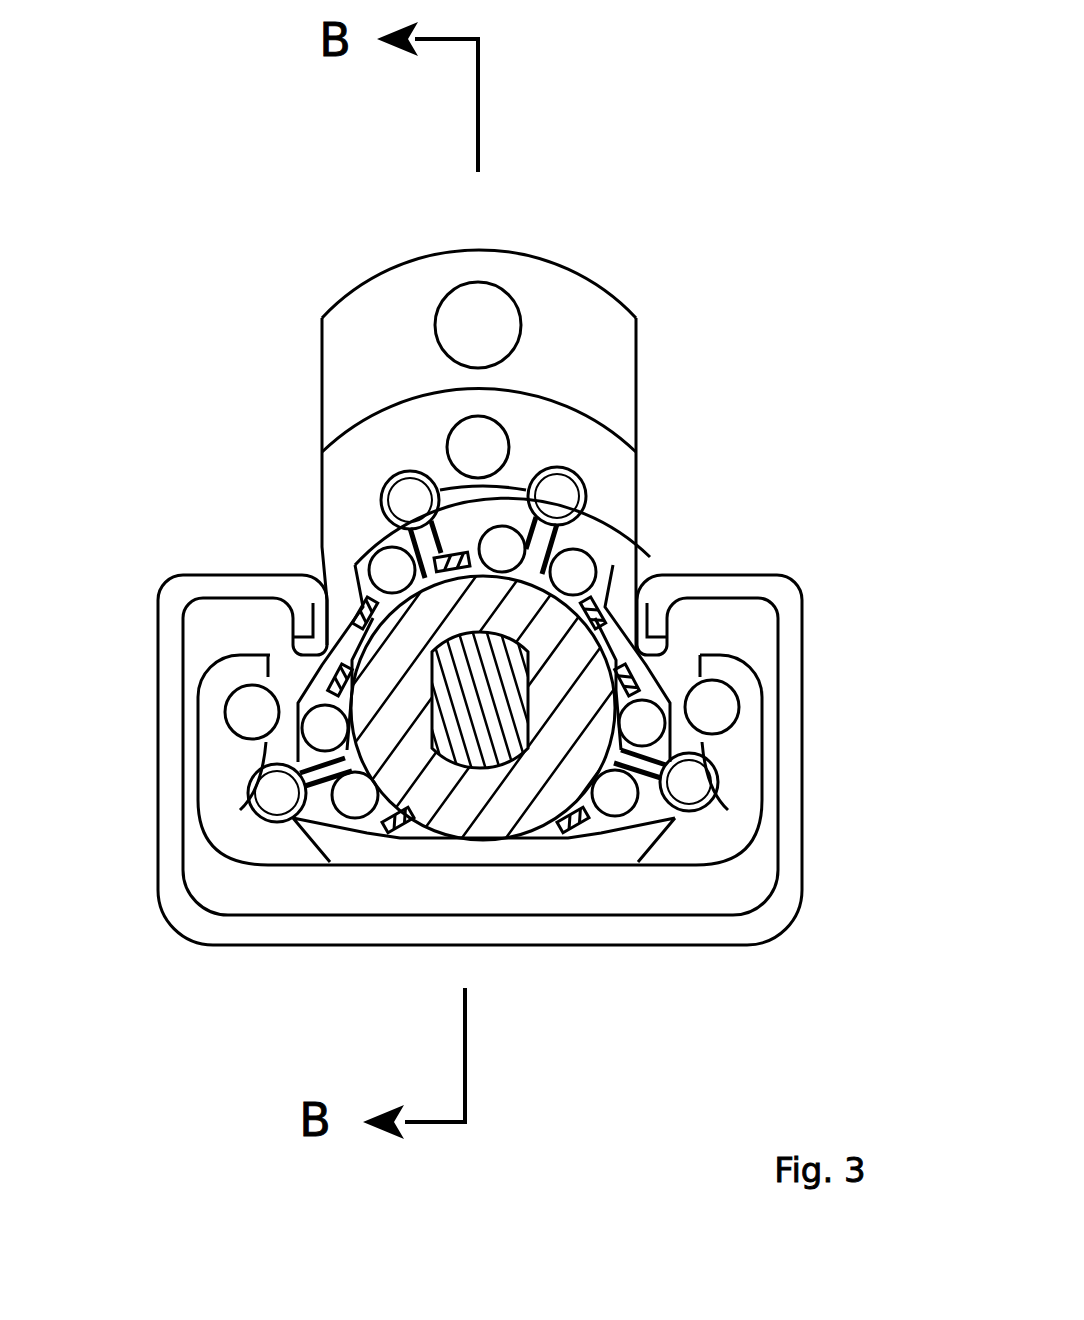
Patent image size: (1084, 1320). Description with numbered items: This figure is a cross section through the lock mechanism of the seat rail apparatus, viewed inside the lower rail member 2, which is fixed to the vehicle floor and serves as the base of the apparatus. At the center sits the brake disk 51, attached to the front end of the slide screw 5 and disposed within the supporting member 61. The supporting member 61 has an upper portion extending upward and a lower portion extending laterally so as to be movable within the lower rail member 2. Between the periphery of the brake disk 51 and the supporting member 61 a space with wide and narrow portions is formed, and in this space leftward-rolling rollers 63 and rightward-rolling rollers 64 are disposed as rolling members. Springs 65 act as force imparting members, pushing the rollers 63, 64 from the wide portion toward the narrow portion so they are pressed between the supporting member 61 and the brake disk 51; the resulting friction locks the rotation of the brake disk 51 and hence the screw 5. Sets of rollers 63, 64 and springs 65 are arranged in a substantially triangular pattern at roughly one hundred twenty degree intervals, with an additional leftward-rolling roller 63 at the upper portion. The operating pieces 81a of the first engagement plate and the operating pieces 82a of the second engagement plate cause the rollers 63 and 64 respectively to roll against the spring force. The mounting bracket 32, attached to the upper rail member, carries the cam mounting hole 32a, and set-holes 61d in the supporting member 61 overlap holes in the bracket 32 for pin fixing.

The lower rail member 2 is at (773, 912).
The slide screw 5 is at (485, 715).
The brake disk 51 is at (535, 790).
The mounting bracket 32 is at (582, 345).
The cam mounting hole 32a is at (512, 300).
The supporting member 61 is at (388, 458).
The set-holes 61d is at (512, 437).
The leftward-rolling rollers 63 is at (392, 570).
The rightward-rolling rollers 64 is at (573, 572).
The springs 65 is at (390, 479).
The operating pieces 81a is at (358, 592).
The operating pieces 82a is at (330, 677).